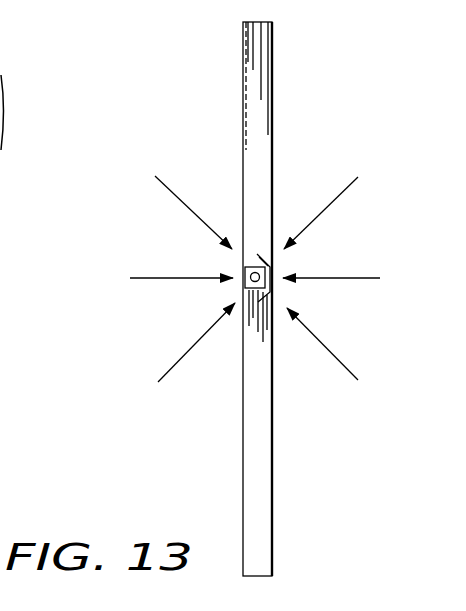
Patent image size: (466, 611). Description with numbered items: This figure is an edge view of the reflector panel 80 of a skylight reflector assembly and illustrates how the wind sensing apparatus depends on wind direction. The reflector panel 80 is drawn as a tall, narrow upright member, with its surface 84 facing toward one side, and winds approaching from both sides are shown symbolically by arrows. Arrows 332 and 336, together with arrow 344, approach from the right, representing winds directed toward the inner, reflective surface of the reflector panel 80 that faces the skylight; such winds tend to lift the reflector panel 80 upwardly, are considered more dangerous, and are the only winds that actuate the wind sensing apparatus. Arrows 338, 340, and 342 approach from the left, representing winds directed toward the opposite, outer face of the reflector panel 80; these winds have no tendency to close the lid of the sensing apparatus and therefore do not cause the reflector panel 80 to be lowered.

The reflector panel 80 is at (284, 72).
The side surface of member 84 is at (265, 143).
The arrow 332 is at (330, 198).
The arrow 336 is at (333, 350).
The arrow 338 is at (176, 195).
The arrow 340 is at (150, 276).
The arrow 342 is at (186, 352).
The adjustment direction 344 is at (352, 276).